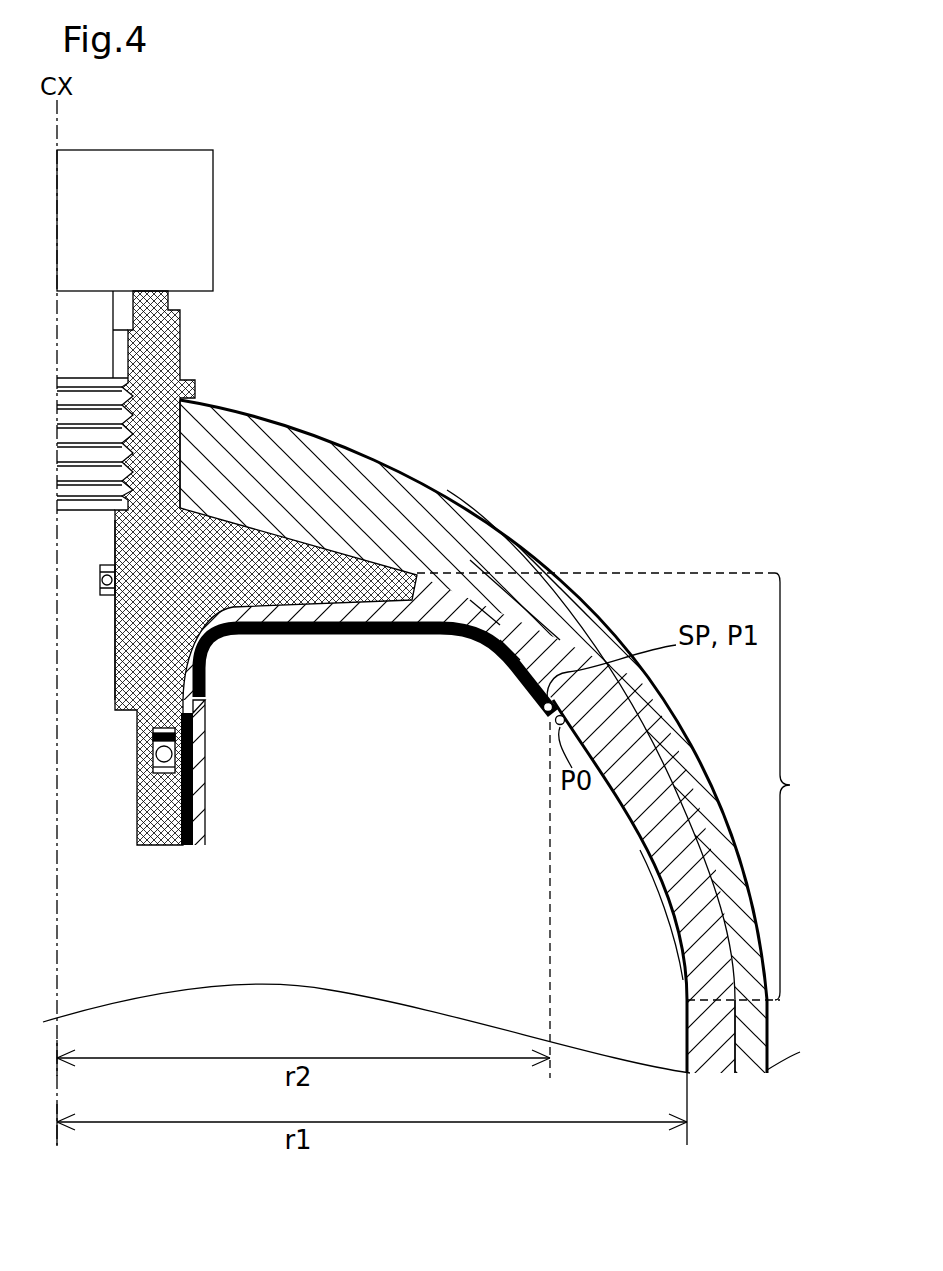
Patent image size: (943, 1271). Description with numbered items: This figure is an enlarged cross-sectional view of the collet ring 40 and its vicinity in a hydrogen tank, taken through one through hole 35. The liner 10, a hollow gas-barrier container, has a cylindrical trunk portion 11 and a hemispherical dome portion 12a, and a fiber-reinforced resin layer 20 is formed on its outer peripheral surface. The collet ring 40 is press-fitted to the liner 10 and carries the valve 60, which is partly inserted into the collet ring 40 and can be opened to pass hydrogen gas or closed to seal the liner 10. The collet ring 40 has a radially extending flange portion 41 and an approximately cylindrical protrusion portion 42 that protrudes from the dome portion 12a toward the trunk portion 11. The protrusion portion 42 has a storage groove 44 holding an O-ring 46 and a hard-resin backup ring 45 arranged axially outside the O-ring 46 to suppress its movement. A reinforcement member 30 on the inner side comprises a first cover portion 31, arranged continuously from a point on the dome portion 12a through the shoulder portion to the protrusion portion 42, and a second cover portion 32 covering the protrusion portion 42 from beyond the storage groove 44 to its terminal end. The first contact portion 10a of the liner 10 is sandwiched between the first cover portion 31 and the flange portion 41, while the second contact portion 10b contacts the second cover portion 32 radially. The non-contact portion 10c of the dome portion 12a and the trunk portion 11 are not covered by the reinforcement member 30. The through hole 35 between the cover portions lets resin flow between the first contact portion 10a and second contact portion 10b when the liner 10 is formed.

The valve 60 is at (170, 221).
The collet ring 40 is at (292, 520).
The flange portion 41 is at (215, 545).
The protrusion portion 42 is at (160, 646).
The storage groove 44 is at (145, 778).
The backup ring 45 is at (153, 737).
The O-ring 46 is at (160, 757).
The through hole 35 is at (194, 705).
The liner 10 is at (610, 757).
The first contact portion 10a is at (293, 635).
The second contact portion 10b is at (200, 823).
The non-contact portion 10c is at (668, 872).
The fiber-reinforced resin layer 20 is at (665, 757).
The reinforcement member 30 is at (605, 440).
The first cover portion 31 is at (475, 633).
The second cover portion 32 is at (193, 807).
The trunk portion 11 is at (780, 1004).
The dome portion 12a is at (809, 786).